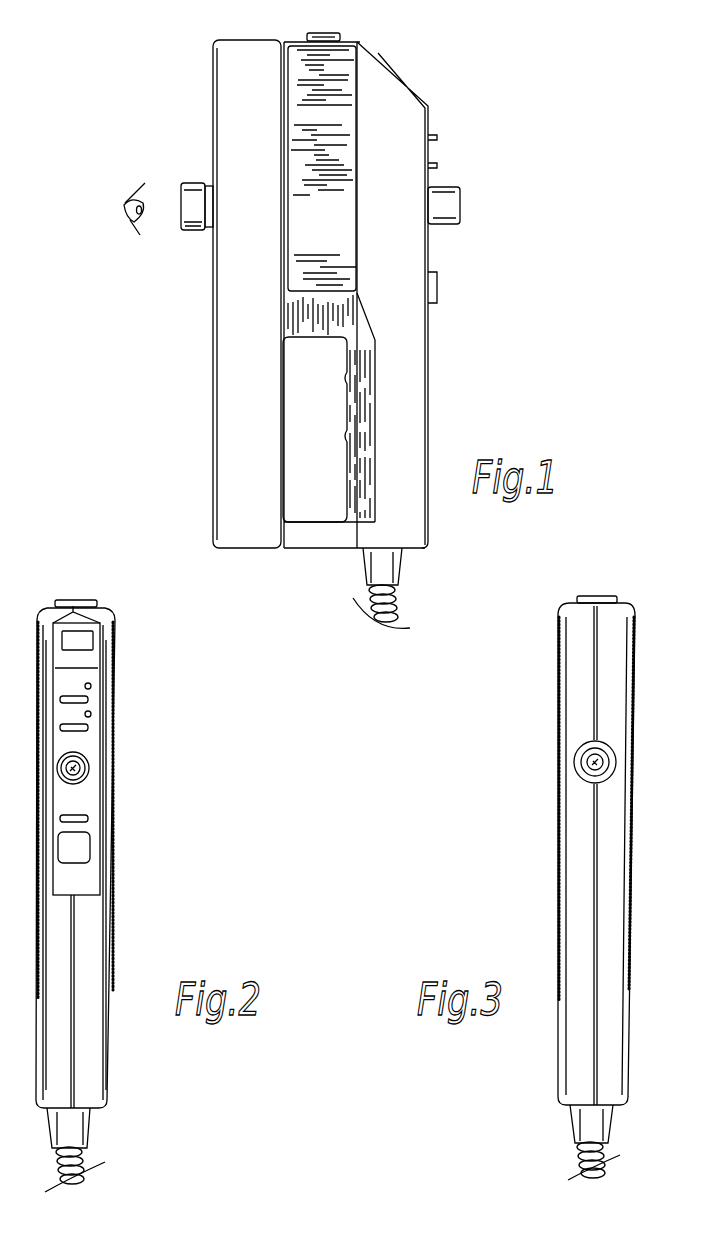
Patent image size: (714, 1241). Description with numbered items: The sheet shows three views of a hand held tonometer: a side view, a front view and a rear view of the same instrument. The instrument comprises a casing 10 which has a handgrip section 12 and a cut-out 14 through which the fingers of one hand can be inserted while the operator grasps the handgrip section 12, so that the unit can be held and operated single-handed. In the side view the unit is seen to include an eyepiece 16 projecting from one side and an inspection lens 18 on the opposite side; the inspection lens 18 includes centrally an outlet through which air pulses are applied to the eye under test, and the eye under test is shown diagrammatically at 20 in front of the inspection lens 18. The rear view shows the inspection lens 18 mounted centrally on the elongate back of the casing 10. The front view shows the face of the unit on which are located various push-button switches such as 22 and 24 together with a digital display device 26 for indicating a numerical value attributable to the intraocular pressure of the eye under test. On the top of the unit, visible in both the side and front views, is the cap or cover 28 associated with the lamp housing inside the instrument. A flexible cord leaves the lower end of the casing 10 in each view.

In FIG. 1, the casing 10 is at (213, 412).
In FIG. 1, the handgrip section 12 is at (427, 440).
In FIG. 1, the cut-out 14 is at (316, 420).
In FIG. 1, the eyepiece 16 is at (462, 196).
In FIG. 1, the inspection lens 18 is at (183, 185).
In FIG. 3, the inspection lens 18 is at (580, 748).
In FIG. 1, the eye under test 20 is at (130, 216).
In FIG. 2, the push-button switch 22 is at (90, 726).
In FIG. 2, the push-button switch 24 is at (80, 850).
In FIG. 2, the digital display device 26 is at (95, 641).
In FIG. 1, the cap or cover 28 is at (340, 34).
In FIG. 2, the cap or cover 28 is at (75, 600).